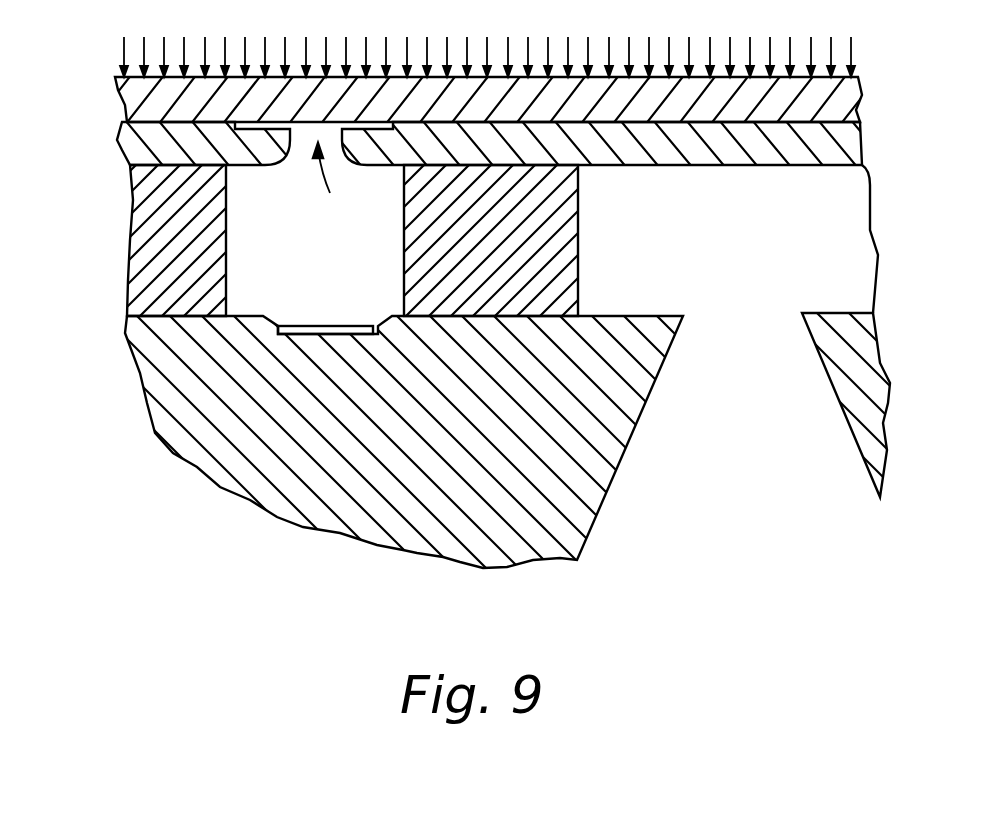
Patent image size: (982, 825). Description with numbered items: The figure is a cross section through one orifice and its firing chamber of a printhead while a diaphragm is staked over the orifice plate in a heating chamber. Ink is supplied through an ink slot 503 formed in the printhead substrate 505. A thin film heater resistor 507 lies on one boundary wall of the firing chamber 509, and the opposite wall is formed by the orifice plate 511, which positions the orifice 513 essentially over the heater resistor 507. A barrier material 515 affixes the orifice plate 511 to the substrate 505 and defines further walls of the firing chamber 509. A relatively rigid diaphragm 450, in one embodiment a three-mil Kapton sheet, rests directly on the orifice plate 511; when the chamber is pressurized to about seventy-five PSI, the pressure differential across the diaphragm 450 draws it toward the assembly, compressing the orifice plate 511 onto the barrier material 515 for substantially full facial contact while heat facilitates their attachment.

The diaphragm 450 is at (128, 100).
The orifice plate 511 is at (133, 148).
The barrier material 515 is at (140, 230).
The orifice 513 is at (342, 178).
The firing chamber 509 is at (332, 247).
The thin film heater resistor 507 is at (327, 327).
The printhead substrate 505 is at (607, 452).
The ink slot 503 is at (759, 389).